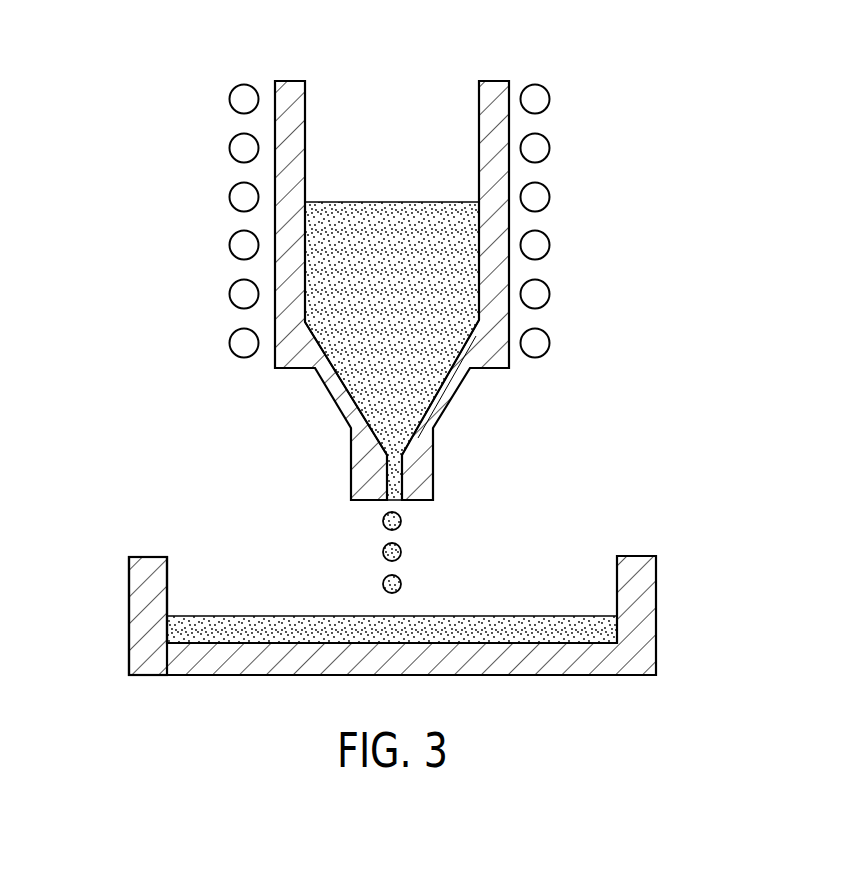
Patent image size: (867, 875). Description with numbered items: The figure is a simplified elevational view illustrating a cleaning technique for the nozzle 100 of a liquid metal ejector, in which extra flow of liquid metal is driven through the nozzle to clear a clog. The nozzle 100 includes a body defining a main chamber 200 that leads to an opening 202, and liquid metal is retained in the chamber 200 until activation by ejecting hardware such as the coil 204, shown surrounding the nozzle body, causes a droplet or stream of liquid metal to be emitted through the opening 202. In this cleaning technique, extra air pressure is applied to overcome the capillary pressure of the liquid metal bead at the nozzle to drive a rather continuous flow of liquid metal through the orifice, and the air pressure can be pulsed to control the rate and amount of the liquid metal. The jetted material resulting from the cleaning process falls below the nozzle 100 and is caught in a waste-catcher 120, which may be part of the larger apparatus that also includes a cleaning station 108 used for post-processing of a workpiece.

The nozzle 100 is at (448, 301).
The main chamber 200 is at (292, 80).
The coil 204 is at (552, 247).
The opening 202 is at (402, 500).
The cleaning station 108 is at (411, 615).
The waste-catcher 120 is at (135, 620).